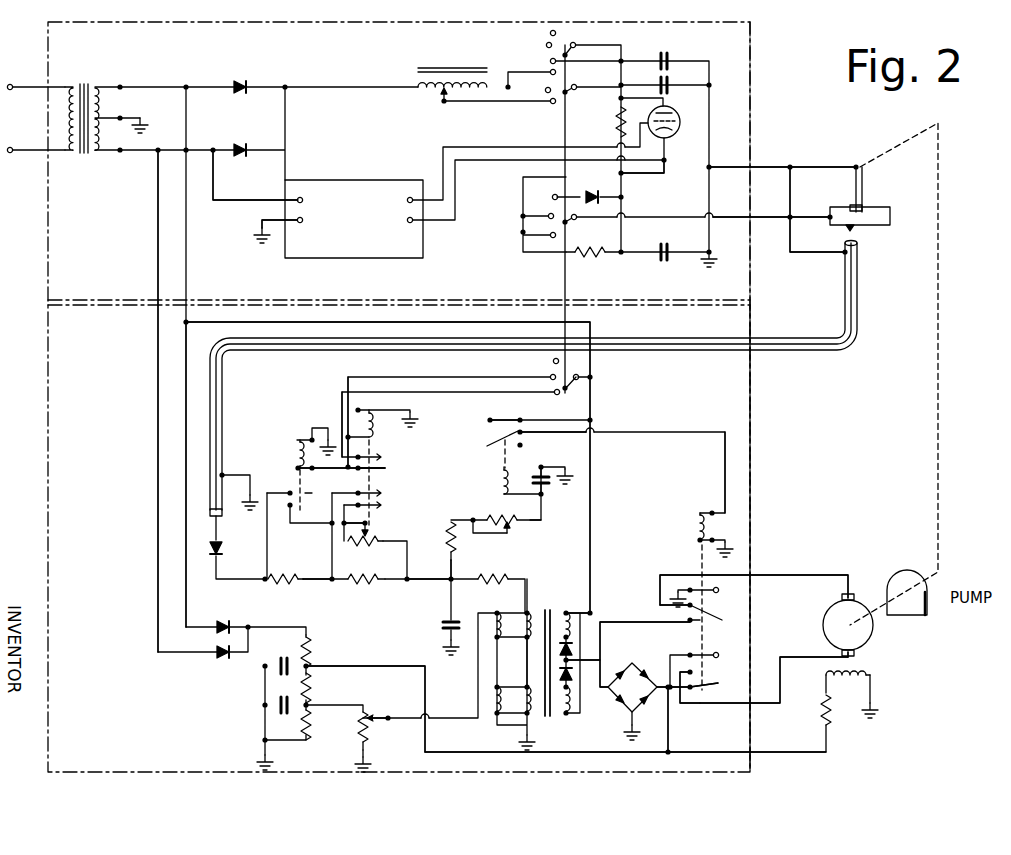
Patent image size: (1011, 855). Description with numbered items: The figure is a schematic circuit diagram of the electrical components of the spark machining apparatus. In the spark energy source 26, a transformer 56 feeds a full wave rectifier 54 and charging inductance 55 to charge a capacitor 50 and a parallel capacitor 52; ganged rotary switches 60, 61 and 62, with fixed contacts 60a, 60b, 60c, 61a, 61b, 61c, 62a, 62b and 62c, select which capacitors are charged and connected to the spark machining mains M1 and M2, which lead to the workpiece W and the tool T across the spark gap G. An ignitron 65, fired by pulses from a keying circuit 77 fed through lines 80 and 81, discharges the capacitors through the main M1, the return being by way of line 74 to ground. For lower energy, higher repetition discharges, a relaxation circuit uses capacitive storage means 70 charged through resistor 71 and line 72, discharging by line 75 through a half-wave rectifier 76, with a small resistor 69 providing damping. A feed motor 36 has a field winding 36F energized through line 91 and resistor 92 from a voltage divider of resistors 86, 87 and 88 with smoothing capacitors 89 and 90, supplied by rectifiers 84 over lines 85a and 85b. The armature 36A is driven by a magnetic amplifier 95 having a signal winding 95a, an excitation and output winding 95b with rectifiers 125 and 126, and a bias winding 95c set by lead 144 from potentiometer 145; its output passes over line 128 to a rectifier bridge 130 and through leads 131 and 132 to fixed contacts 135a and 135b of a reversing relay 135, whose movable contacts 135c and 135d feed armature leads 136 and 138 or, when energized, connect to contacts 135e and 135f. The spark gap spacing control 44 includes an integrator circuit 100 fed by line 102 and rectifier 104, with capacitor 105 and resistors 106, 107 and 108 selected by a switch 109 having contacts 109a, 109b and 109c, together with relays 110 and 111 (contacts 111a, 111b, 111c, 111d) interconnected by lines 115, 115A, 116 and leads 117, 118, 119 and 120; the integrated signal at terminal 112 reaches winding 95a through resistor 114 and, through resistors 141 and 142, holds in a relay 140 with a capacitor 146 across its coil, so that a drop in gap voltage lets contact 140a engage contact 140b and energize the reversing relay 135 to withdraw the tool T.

The spark energy source 26 is at (754, 106).
The feed motor 36 is at (856, 595).
The armature 36A is at (872, 640).
The field winding 36F is at (871, 674).
The spark gap spacing control 44 is at (754, 434).
The capacitor 50 is at (668, 75).
The capacitor 52 is at (661, 46).
The rectifier 54 is at (258, 58).
The charging inductance 55 is at (447, 68).
The transformer 56 is at (81, 71).
The switch 60 is at (578, 92).
The fixed contact 60a is at (546, 103).
The fixed contact 60b is at (547, 90).
The fixed contact 60c is at (552, 73).
The switch 61 is at (574, 40).
The fixed contact 61a is at (549, 62).
The fixed contact 61b is at (546, 46).
The fixed contact 61c is at (551, 34).
The switch 62 is at (570, 226).
The fixed contact 62a is at (554, 236).
The fixed contact 62b is at (556, 218).
The fixed contact 62c is at (546, 201).
The ignitron 65 is at (674, 130).
The resistor 69 is at (580, 257).
The capacitive storage means 70 is at (666, 244).
The resistor 71 is at (616, 124).
The line 72 is at (628, 202).
The line 74 is at (707, 204).
The line 75 is at (622, 176).
The half-wave rectifier 76 is at (599, 188).
The keying circuit 77 is at (341, 172).
The line 80 is at (240, 198).
The line 81 is at (260, 221).
The rectifiers 84 is at (228, 614).
The line 85a is at (158, 453).
The line 85b is at (185, 419).
The resistor 86 is at (310, 650).
The resistor 87 is at (312, 688).
The resistor 88 is at (311, 722).
The smoothing capacitor 89 is at (284, 654).
The smoothing capacitor 90 is at (294, 698).
The line 91 is at (555, 752).
The resistor 92 is at (832, 717).
The magnetic amplifier 95 is at (559, 667).
The signal winding 95a is at (521, 688).
The winding 95b is at (574, 609).
The bias winding 95c is at (521, 656).
The integrator circuit 100 is at (421, 576).
The line 102 is at (631, 352).
The half-wave rectifier 104 is at (222, 558).
The capacitor 105 is at (440, 624).
The resistor 106 is at (306, 586).
The resistor 107 is at (354, 586).
The resistor 108 is at (355, 546).
The switch 109 is at (588, 389).
The fixed contact 109a is at (554, 392).
The fixed contact 109b is at (551, 377).
The fixed contact 109c is at (556, 361).
The relay 110 is at (290, 468).
The relay 111 is at (385, 440).
The fixed contact 111a is at (384, 458).
The movable contact 111b is at (388, 469).
The relay contact 111c is at (384, 492).
The relay contact 111d is at (384, 506).
The terminal 112 is at (452, 579).
The resistor 114 is at (492, 578).
The line 115 is at (420, 321).
The lead 115A is at (410, 378).
The line 116 is at (419, 392).
The lead 117 is at (262, 546).
The lead 118 is at (319, 574).
The lead 119 is at (322, 471).
The lead 120 is at (371, 524).
The half-wave rectifier 125 is at (576, 648).
The half-wave rectifier 126 is at (577, 690).
The line 128 is at (637, 665).
The rectifier bridge 130 is at (632, 687).
The lead 131 is at (601, 620).
The lead 132 is at (670, 690).
The reversing relay 135 is at (696, 540).
The fixed contact 135a is at (706, 626).
The fixed contact 135b is at (702, 704).
The movable contact 135c is at (714, 618).
The movable contact 135d is at (716, 682).
The fixed contact 135e is at (714, 654).
The fixed contact 135f is at (716, 590).
The lead 136 is at (803, 575).
The lead 138 is at (779, 706).
The relay 140 is at (492, 480).
The movable contact 140a is at (486, 421).
The fixed contact 140b is at (514, 421).
The resistor 141 is at (524, 524).
The resistor 142 is at (454, 533).
The lead 144 is at (428, 692).
The potentiometer 145 is at (371, 742).
The capacitor 146 is at (550, 486).
The spark machining main M1 is at (810, 216).
The spark machining main M2 is at (822, 167).
The tool T is at (866, 188).
The spark gap G is at (865, 205).
The workpiece W is at (892, 216).